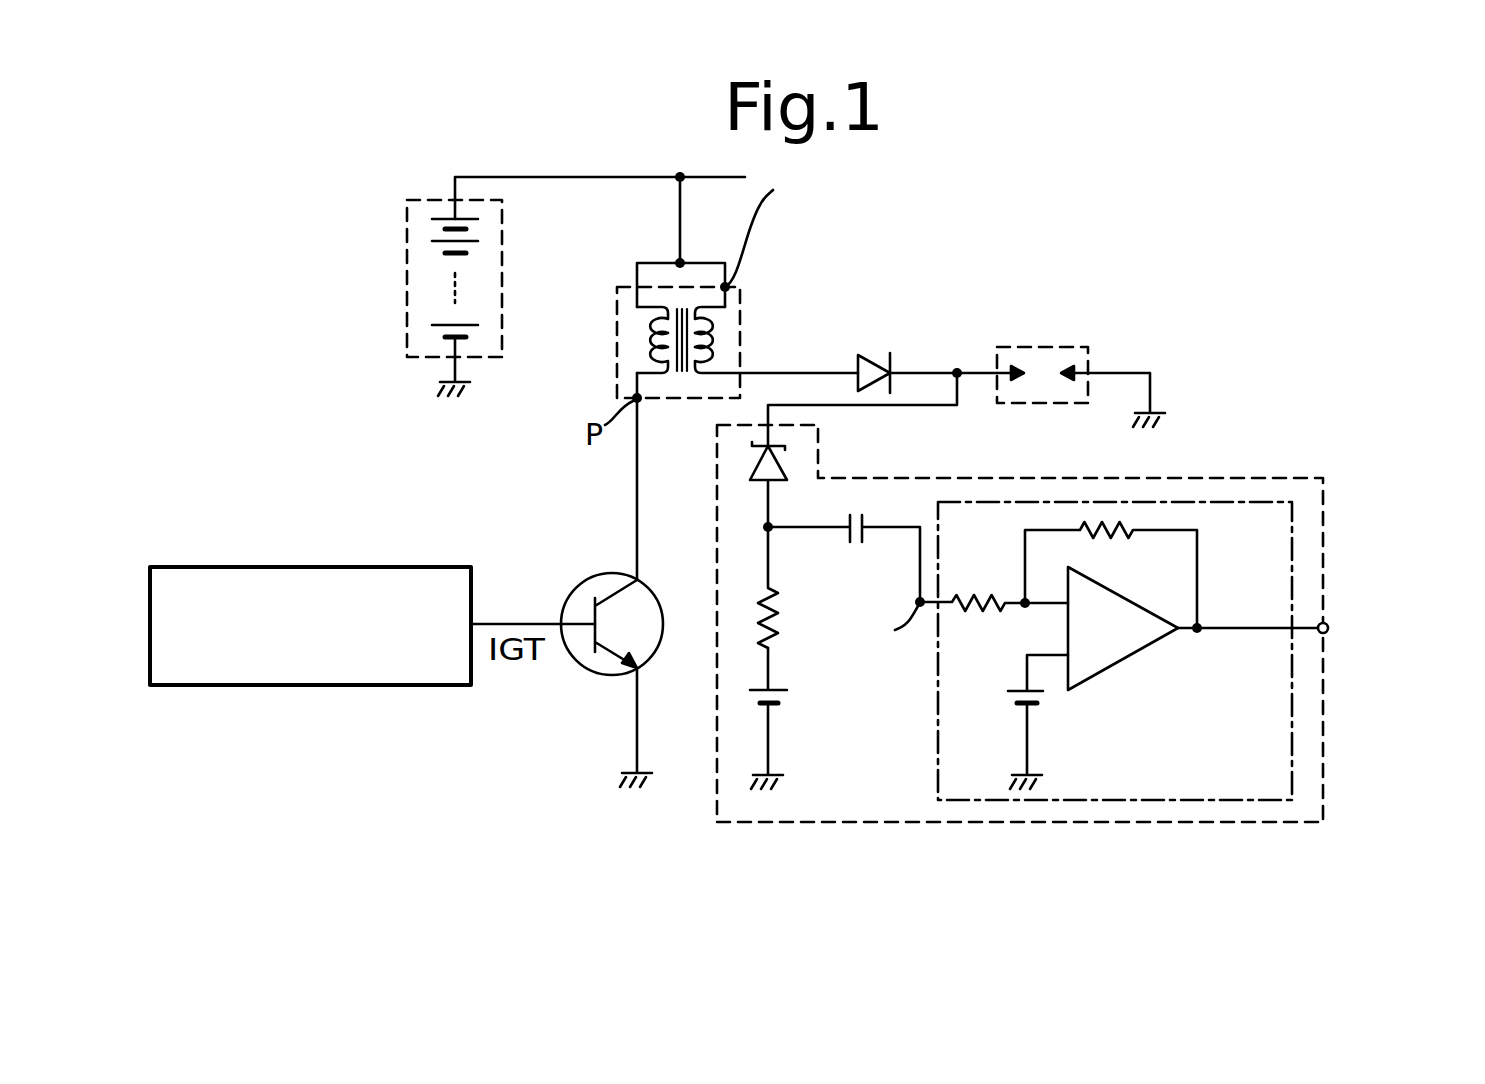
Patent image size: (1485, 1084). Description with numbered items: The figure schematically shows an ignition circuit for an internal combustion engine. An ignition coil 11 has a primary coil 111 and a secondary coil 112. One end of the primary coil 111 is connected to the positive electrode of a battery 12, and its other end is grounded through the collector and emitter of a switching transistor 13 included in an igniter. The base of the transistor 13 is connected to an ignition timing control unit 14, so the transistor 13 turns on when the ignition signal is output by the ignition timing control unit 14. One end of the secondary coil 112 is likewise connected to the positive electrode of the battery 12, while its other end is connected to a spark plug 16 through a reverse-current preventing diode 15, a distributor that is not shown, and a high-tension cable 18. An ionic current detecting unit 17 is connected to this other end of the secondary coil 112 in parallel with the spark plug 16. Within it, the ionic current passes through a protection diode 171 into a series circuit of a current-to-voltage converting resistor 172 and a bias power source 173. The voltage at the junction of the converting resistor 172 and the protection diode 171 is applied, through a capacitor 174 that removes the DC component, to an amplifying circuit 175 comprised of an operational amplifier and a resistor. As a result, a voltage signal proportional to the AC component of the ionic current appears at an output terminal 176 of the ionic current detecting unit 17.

The ignition coil 11 is at (695, 286).
The primary coil 111 is at (648, 333).
The secondary coil 112 is at (720, 333).
The battery 12 is at (407, 255).
The switching transistor 13 is at (660, 598).
The ignition timing control unit 14 is at (397, 567).
The reverse-current preventing diode 15 is at (873, 352).
The spark plug 16 is at (1040, 347).
The ionic current detecting unit 17 is at (1323, 533).
The protection diode 171 is at (787, 472).
The current-to-voltage converting resistor 172 is at (778, 630).
The bias power source 173 is at (785, 700).
The capacitor 174 is at (844, 558).
The amplifying circuit 175 is at (1292, 755).
The output terminal 176 is at (1330, 628).
The high-tension cable 18 is at (930, 373).